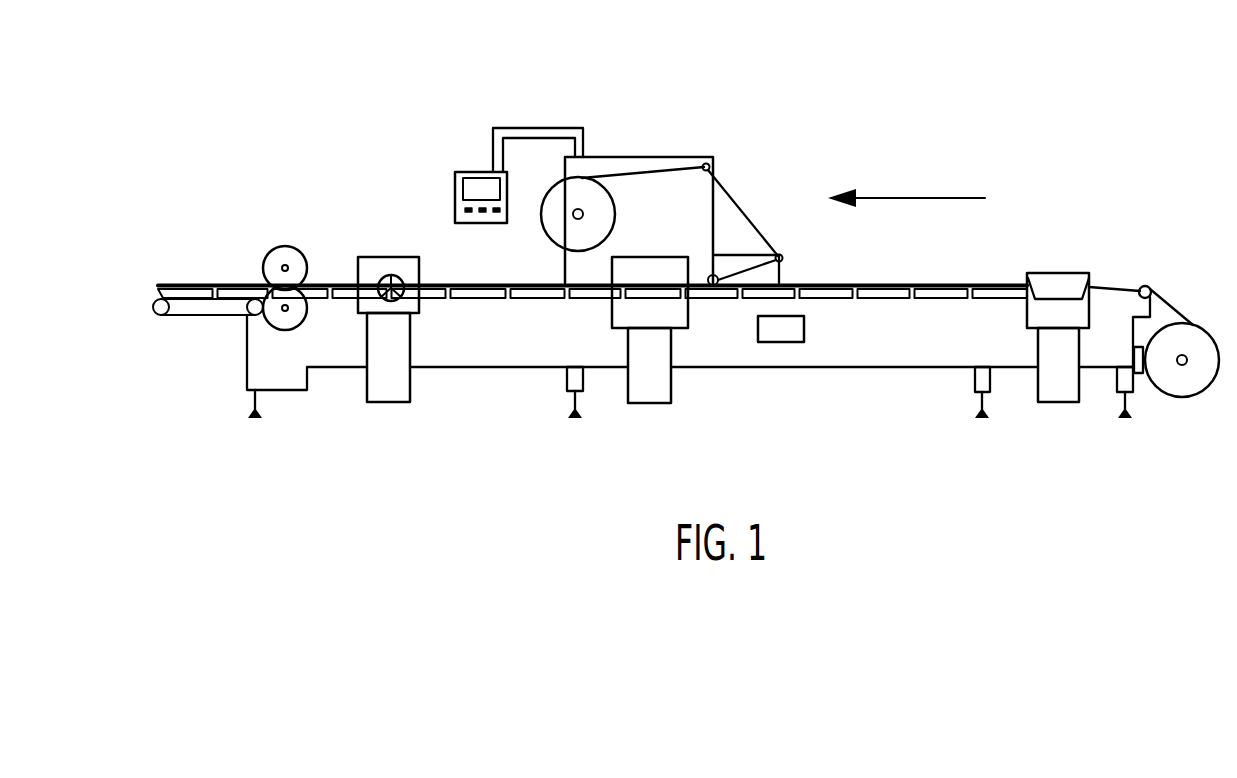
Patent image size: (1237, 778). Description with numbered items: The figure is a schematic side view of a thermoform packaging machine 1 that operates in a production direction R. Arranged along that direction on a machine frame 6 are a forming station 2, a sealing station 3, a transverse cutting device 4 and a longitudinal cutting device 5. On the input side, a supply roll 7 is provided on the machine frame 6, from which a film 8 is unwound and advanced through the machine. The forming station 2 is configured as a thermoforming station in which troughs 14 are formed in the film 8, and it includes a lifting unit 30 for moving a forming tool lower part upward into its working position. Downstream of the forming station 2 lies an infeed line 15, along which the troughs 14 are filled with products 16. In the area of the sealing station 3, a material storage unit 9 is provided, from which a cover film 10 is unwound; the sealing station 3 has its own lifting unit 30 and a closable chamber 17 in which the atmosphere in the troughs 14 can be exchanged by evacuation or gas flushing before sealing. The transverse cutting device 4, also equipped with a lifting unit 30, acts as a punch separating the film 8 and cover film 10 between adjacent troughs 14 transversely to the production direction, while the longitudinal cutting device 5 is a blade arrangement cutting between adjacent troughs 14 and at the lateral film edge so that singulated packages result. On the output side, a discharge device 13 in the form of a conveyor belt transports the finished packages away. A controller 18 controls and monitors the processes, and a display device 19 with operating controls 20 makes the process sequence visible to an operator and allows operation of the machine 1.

The thermoform packaging machine 1 is at (930, 80).
The forming station 2 is at (1040, 275).
The sealing station 3 is at (635, 268).
The transverse cutting device 4 is at (378, 262).
The longitudinal cutting device 5 is at (285, 238).
The machine frame 6 is at (556, 377).
The supply roll 7 is at (1192, 335).
The film 8 is at (1165, 300).
The material storage unit 9 is at (562, 233).
The cover film 10 is at (676, 163).
The discharge device 13 is at (197, 315).
The troughs 14 is at (1065, 298).
The infeed line 15 is at (852, 305).
The products 16 is at (900, 283).
The closable chamber 17 is at (680, 317).
The controller 18 is at (782, 342).
The display device 19 is at (475, 172).
The operating controls 20 is at (458, 210).
The lifting unit 30 is at (394, 398).